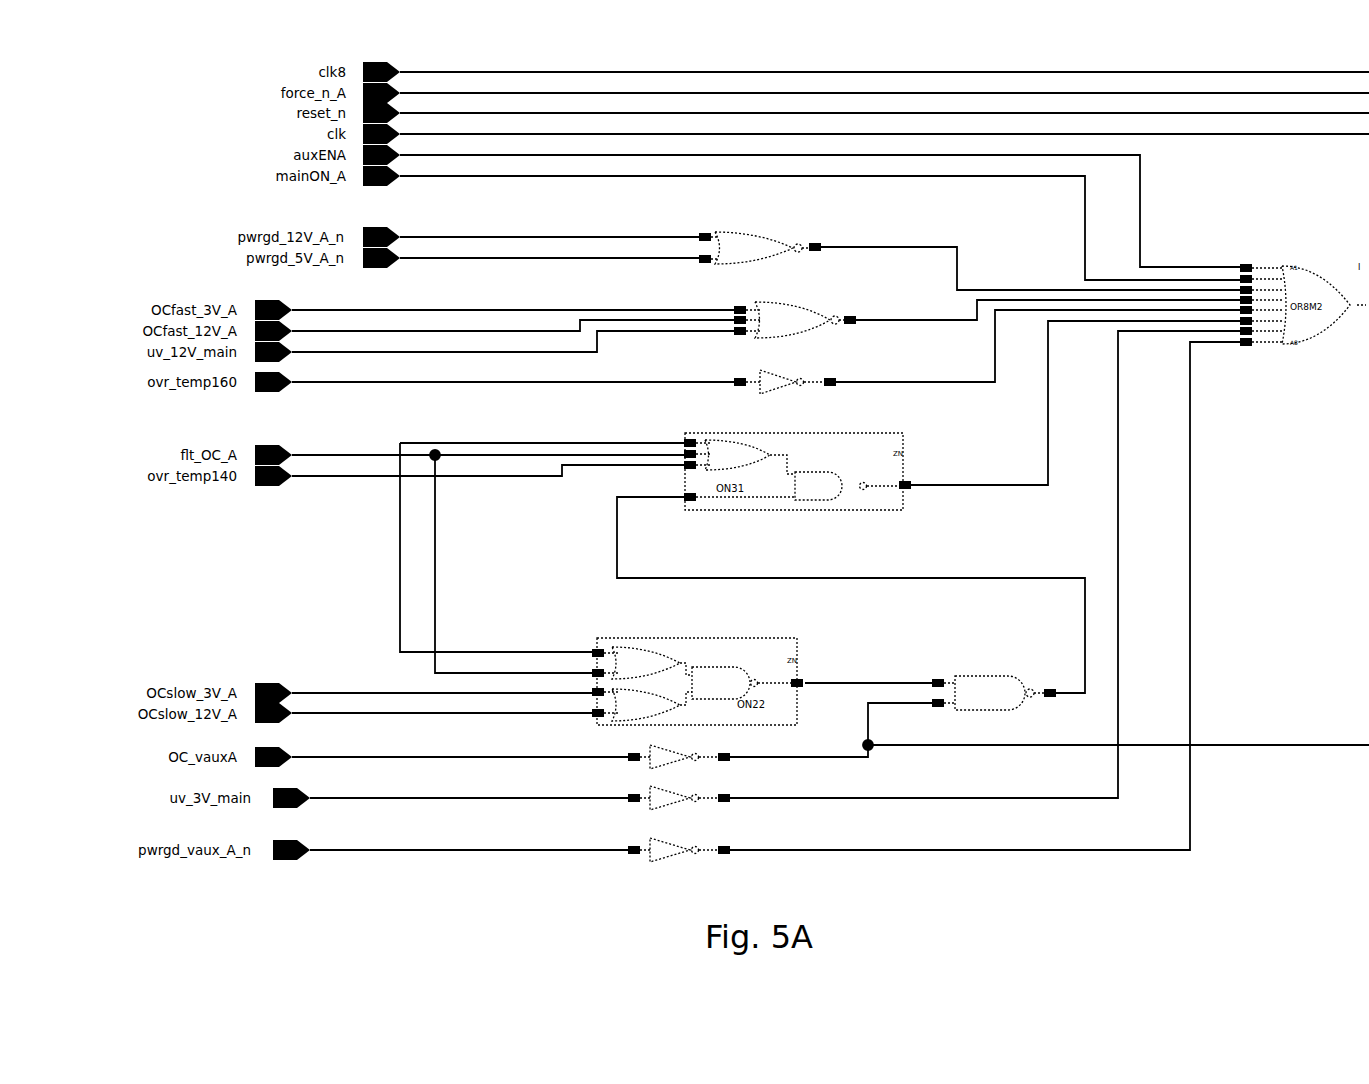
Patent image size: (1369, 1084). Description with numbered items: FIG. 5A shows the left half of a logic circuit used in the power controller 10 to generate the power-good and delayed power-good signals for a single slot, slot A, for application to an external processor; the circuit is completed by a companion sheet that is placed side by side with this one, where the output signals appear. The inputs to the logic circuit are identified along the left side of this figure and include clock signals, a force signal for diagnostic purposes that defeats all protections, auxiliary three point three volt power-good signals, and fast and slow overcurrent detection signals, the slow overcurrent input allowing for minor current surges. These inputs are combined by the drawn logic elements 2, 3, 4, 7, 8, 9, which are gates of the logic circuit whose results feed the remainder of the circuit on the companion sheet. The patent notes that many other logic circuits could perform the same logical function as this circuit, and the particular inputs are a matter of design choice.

The three-input NOR gate NO3 2 is at (795, 314).
The two-input NOR gate NO2 3 is at (760, 241).
The inverter INV 4 is at (785, 373).
The two-input NAND gate NA2 7 is at (994, 685).
The inverter INV 8 is at (679, 747).
The inverter INV 9 is at (679, 788).
The power controller 10 is at (679, 841).